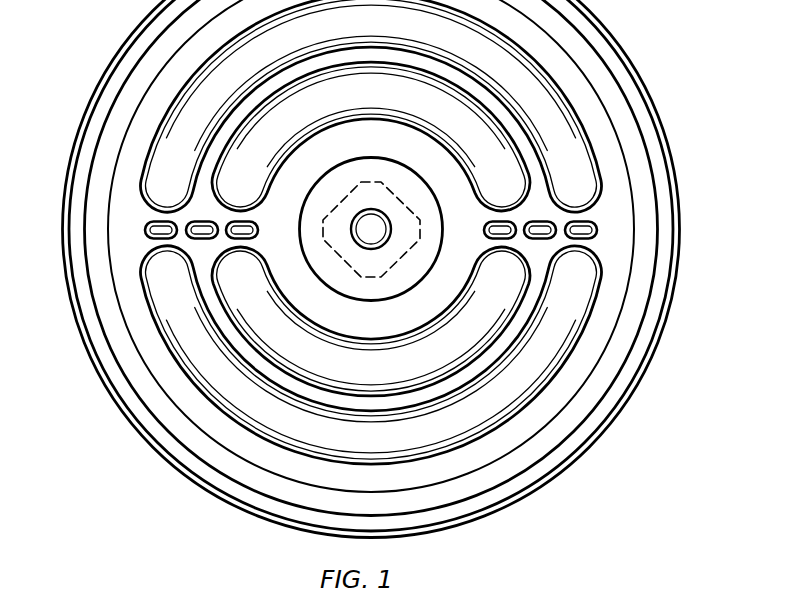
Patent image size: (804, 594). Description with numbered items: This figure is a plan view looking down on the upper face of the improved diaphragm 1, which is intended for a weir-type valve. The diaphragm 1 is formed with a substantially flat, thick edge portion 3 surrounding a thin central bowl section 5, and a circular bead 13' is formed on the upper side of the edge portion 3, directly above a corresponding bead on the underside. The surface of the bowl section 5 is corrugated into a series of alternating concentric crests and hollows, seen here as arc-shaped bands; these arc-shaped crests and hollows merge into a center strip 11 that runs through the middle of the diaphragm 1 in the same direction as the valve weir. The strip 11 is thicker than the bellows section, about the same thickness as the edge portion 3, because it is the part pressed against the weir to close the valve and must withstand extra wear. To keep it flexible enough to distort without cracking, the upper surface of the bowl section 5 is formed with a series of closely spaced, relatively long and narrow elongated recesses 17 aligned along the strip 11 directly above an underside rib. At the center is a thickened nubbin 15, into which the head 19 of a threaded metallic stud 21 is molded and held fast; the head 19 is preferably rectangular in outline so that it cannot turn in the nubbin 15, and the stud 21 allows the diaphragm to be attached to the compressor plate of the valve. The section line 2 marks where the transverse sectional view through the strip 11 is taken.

The diaphragm 1 is at (617, 437).
The section line 2- 2 is at (56, 233).
The edge portion 3 is at (651, 333).
The central bowl section 5 is at (165, 210).
The strip 11 is at (545, 207).
The circular bead 13' is at (371, 258).
The nubbin 15 is at (417, 268).
The elongated recesses 17 is at (168, 226).
The head 19 is at (397, 260).
The threaded metallic stud 21 is at (371, 229).